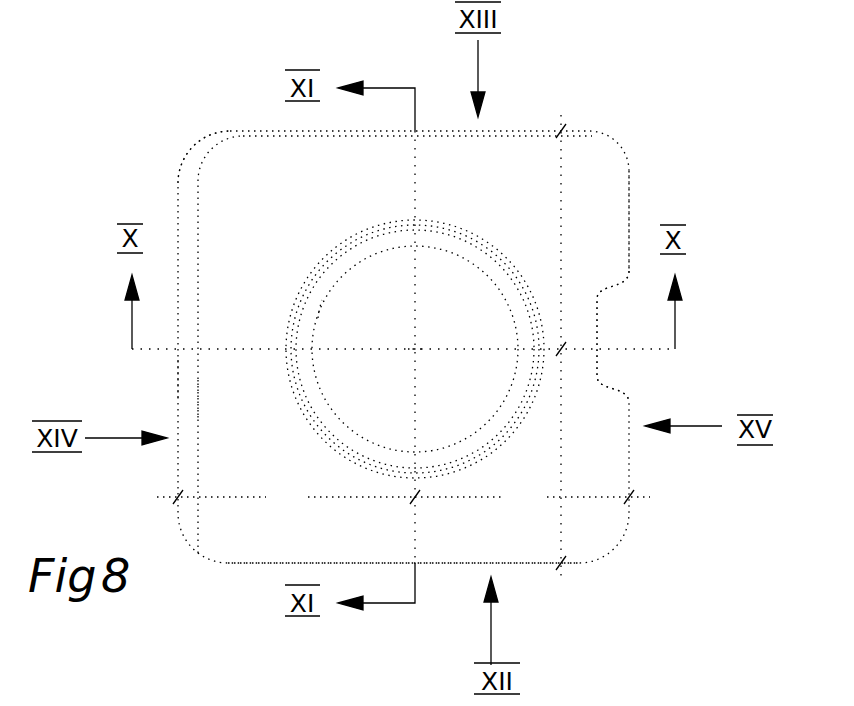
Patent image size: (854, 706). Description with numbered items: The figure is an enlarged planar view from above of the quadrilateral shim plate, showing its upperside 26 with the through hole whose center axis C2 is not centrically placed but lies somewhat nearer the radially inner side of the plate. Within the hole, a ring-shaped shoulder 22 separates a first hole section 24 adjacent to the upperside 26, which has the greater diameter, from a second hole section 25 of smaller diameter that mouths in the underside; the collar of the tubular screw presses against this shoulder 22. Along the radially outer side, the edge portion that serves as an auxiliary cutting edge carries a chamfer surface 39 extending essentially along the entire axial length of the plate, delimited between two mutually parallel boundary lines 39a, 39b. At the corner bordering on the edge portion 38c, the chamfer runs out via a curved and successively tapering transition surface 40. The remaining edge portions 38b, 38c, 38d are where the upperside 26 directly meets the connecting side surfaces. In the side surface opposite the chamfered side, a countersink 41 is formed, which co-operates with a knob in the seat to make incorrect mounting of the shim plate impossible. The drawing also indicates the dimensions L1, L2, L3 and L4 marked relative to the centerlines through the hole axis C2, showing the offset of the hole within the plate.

The ring-shaped shoulder 22 is at (478, 258).
The first hole section 24 is at (341, 254).
The second hole section 25 is at (328, 297).
The upperside 26 is at (250, 220).
The edge portion 38b is at (629, 203).
The edge portion 38c is at (441, 131).
The edge portion 38d is at (457, 563).
The chamfer surface 39 is at (186, 208).
The boundary line 39a is at (178, 385).
The boundary line 39b is at (200, 398).
The transition surface 40 is at (203, 152).
The countersink 41 is at (614, 359).
The center axis of the hole C2 is at (418, 352).
The length L1 is at (288, 497).
The length L2 is at (532, 497).
The length L3 is at (560, 456).
The length L4 is at (561, 189).